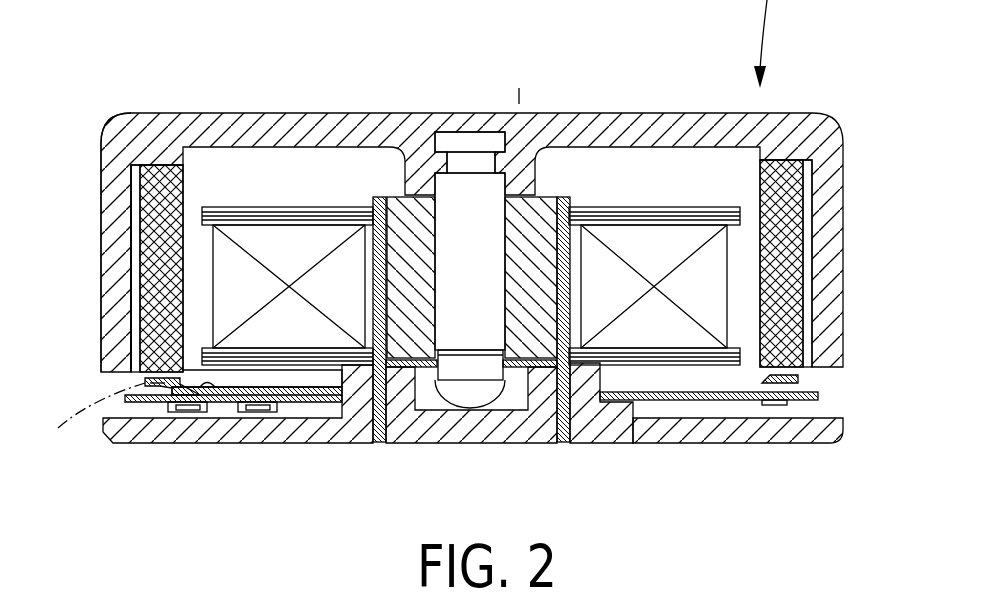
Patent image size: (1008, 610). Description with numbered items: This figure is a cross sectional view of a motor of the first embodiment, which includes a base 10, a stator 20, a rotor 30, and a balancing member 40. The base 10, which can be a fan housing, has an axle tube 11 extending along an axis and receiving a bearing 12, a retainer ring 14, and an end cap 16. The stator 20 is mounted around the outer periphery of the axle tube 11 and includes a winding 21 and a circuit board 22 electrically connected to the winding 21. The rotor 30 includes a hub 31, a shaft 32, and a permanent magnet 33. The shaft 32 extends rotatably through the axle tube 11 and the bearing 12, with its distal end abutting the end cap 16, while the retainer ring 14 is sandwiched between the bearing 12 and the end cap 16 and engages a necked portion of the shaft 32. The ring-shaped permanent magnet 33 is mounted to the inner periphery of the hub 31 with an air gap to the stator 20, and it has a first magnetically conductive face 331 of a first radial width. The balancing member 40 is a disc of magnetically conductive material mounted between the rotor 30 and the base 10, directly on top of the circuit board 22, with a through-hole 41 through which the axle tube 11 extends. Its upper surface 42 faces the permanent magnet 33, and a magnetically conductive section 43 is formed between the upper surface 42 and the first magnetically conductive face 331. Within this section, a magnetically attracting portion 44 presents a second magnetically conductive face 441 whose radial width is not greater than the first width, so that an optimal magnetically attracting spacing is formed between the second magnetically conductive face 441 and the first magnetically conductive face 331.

The base 10 is at (786, 430).
The axle tube 11 is at (590, 300).
The bearing 12 is at (537, 220).
The retainer ring 14 is at (512, 362).
The end cap 16 is at (462, 432).
The stator 20 is at (665, 207).
The winding 21 is at (720, 278).
The circuit board 22 is at (150, 387).
The rotor 30 is at (278, 113).
The hub 31 is at (112, 225).
The shaft 32 is at (462, 197).
The permanent magnet 33 is at (158, 185).
The first magnetically conductive face 331 is at (130, 340).
The balancing member 40 is at (298, 403).
The through-hole 41 is at (340, 402).
The upper surface 42 is at (210, 384).
The magnetically conductive section 43 is at (86, 424).
The magnetically attracting portion 44 is at (180, 382).
The second magnetically conductive face 441 is at (137, 382).